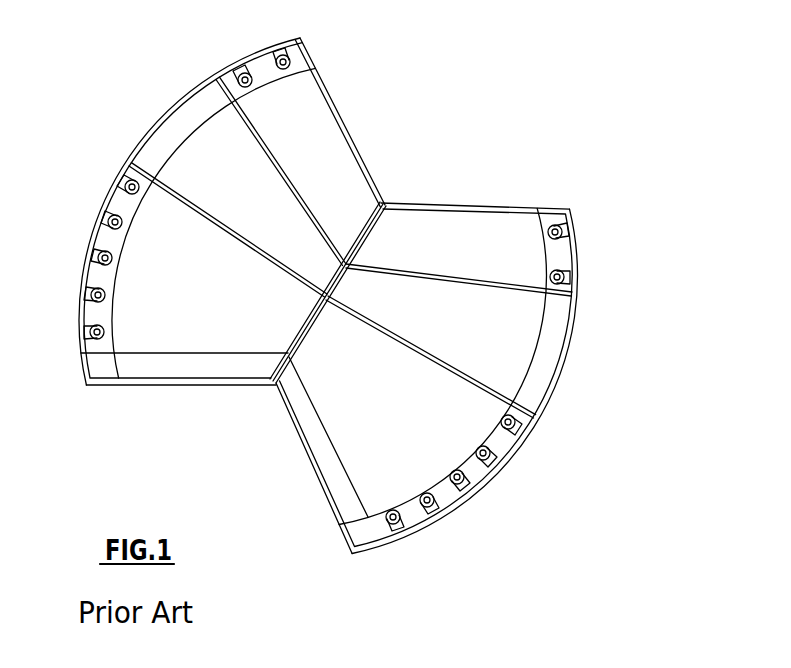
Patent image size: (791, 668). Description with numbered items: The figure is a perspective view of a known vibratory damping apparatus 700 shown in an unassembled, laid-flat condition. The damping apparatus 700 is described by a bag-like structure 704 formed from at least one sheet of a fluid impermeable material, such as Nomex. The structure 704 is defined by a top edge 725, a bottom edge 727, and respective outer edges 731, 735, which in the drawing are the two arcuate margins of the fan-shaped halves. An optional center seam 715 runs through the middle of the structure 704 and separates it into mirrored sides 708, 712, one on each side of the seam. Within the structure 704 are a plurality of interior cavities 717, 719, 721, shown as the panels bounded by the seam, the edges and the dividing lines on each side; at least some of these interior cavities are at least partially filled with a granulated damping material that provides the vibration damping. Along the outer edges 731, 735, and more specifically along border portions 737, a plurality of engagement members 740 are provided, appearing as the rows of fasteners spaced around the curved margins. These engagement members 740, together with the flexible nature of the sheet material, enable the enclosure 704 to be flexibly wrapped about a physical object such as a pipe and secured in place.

The damping apparatus 700 is at (471, 28).
The bag-like structure 704 is at (503, 225).
The mirrored side 708 is at (138, 335).
The mirrored side 712 is at (373, 450).
The center seam 715 is at (297, 343).
The interior cavity 717 is at (323, 143).
The interior cavity 719 is at (205, 320).
The interior cavity 721 is at (217, 162).
The top edge 725 is at (363, 157).
The bottom edge 727 is at (224, 386).
The outer edge 731 is at (142, 140).
The outer edge 735 is at (393, 542).
The border portion 737 is at (209, 105).
The engagement member 740 is at (281, 48).